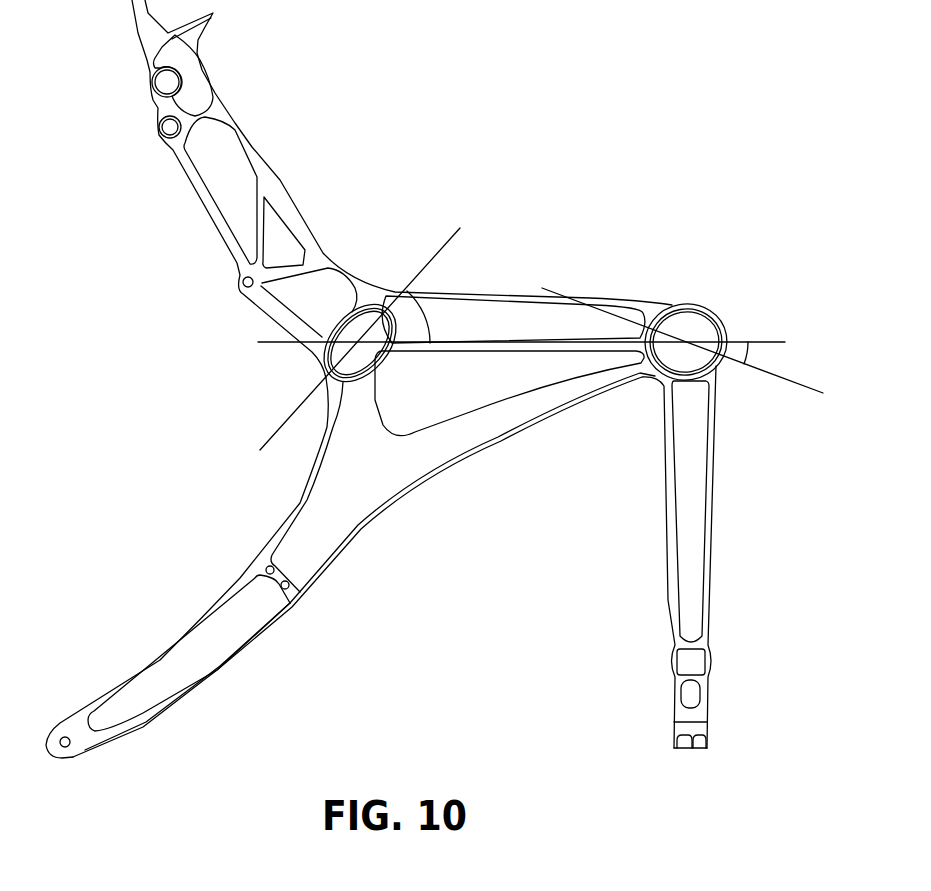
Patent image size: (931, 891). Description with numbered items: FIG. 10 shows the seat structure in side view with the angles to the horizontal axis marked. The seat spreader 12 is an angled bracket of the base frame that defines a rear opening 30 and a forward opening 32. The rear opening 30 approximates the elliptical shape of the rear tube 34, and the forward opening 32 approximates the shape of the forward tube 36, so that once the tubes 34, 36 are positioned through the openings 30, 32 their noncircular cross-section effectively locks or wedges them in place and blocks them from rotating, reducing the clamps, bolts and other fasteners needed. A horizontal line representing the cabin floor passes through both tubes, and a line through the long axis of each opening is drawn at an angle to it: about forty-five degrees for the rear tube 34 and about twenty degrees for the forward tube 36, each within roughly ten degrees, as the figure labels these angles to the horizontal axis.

The seat spreader 12 is at (225, 198).
The rear opening 30 is at (320, 360).
The forward opening 32 is at (735, 372).
The rear tube 34 is at (353, 327).
The forward tube 36 is at (685, 325).